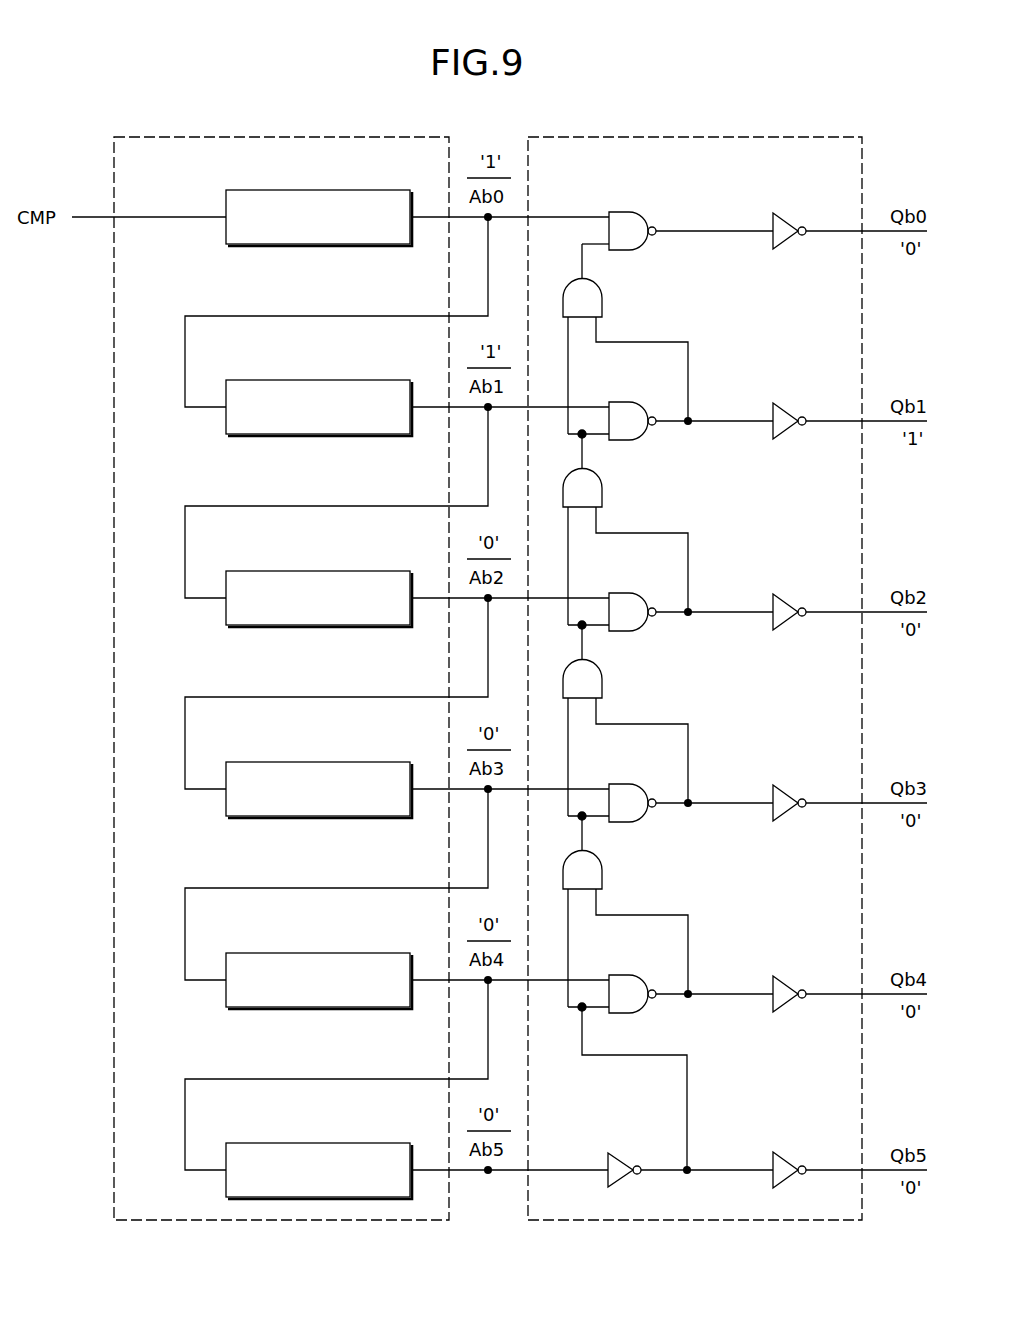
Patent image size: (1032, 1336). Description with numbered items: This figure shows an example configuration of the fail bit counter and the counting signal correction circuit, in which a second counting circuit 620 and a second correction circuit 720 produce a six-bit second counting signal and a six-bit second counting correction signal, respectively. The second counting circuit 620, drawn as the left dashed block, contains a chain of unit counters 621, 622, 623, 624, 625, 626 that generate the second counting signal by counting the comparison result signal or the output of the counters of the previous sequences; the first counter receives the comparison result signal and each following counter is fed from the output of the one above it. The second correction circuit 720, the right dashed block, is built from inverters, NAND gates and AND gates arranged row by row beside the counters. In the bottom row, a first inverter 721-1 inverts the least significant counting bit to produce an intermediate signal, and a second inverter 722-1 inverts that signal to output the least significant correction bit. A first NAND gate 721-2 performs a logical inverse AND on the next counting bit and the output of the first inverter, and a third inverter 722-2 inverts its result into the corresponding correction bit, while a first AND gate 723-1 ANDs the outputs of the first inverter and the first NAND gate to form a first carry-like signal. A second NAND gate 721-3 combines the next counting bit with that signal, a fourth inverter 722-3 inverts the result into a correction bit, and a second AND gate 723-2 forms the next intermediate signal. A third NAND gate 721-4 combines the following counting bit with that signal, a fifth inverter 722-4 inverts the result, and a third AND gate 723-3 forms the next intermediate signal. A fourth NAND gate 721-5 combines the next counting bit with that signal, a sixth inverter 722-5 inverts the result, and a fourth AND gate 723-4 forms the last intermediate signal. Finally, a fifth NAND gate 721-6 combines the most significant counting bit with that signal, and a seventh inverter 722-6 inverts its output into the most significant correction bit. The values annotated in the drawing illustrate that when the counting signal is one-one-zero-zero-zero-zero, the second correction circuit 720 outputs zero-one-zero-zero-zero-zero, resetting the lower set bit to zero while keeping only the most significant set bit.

The second counting circuit 620 is at (400, 137).
The second correction circuit 720 is at (815, 137).
The unit counter 621 is at (388, 175).
The unit counter 622 is at (388, 365).
The unit counter 623 is at (388, 556).
The unit counter 624 is at (388, 747).
The unit counter 625 is at (388, 938).
The unit counter 626 is at (388, 1128).
The first inverter 721-1 is at (637, 1146).
The first NAND gate 721-2 is at (640, 953).
The second NAND gate 721-3 is at (640, 762).
The third NAND gate 721-4 is at (640, 571).
The fourth NAND gate 721-5 is at (640, 380).
The fifth NAND gate 721-6 is at (640, 190).
The second inverter 722-1 is at (813, 1142).
The third inverter 722-2 is at (813, 966).
The fourth inverter 722-3 is at (813, 775).
The fifth inverter 722-4 is at (813, 584).
The sixth inverter 722-5 is at (813, 393).
The seventh inverter 722-6 is at (813, 203).
The first AND gate 723-1 is at (603, 878).
The second AND gate 723-2 is at (603, 687).
The third AND gate 723-3 is at (603, 496).
The fourth AND gate 723-4 is at (603, 306).